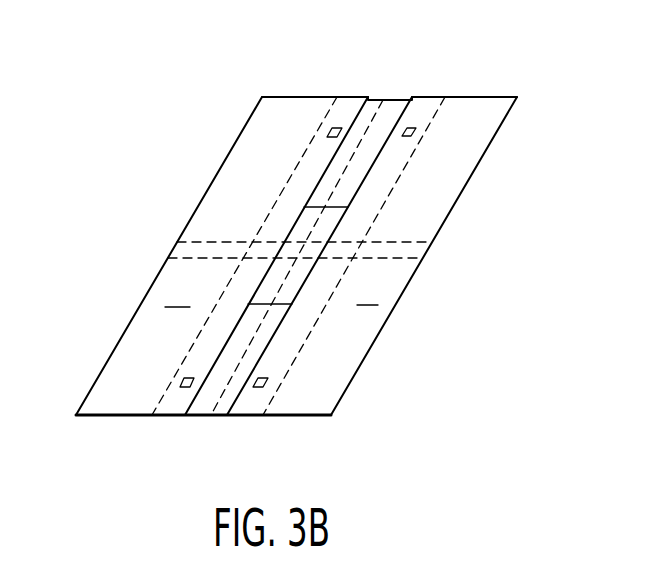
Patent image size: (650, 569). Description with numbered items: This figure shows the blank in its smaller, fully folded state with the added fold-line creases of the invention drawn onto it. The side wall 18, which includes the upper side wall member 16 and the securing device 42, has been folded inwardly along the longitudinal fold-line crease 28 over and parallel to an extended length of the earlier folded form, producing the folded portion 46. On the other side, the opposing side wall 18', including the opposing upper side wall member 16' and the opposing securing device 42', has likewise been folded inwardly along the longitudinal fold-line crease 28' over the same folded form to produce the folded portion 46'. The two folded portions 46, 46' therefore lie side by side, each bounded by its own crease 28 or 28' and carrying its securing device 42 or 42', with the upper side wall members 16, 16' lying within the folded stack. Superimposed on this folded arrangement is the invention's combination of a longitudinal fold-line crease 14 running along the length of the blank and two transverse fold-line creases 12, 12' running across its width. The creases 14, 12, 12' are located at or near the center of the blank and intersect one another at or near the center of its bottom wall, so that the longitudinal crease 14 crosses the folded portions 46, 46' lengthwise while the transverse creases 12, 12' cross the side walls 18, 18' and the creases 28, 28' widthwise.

The transverse fold-line crease 12 is at (340, 294).
The transverse fold-line crease 12' is at (356, 228).
The longitudinal fold-line crease 14 is at (375, 116).
The upper side wall member 16 is at (405, 256).
The opposing upper side wall member 16' is at (236, 256).
The side wall 18 is at (367, 294).
The opposing side wall 18' is at (178, 297).
The longitudinal fold-line crease 28 is at (456, 256).
The longitudinal fold-line crease 28' is at (169, 256).
The securing device 42 is at (331, 375).
The opposing securing device 42' is at (113, 364).
The folded portion 46 is at (211, 451).
The folded portion 46' is at (389, 57).